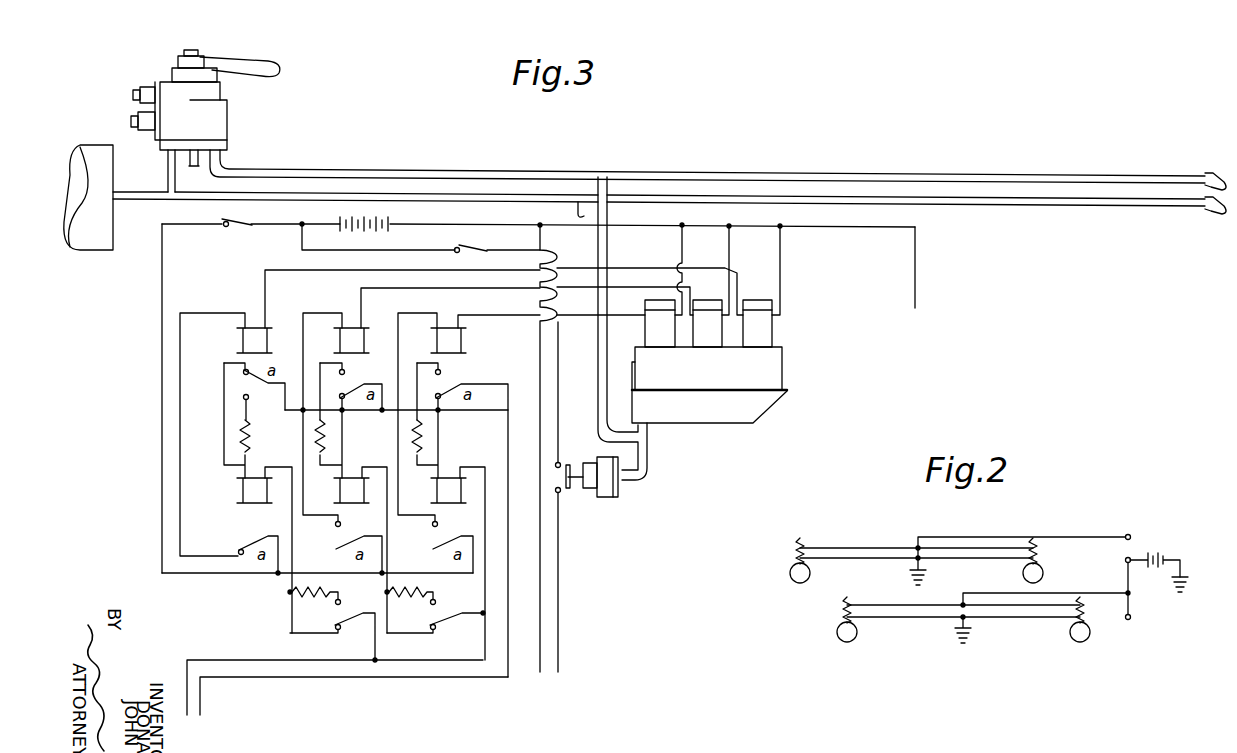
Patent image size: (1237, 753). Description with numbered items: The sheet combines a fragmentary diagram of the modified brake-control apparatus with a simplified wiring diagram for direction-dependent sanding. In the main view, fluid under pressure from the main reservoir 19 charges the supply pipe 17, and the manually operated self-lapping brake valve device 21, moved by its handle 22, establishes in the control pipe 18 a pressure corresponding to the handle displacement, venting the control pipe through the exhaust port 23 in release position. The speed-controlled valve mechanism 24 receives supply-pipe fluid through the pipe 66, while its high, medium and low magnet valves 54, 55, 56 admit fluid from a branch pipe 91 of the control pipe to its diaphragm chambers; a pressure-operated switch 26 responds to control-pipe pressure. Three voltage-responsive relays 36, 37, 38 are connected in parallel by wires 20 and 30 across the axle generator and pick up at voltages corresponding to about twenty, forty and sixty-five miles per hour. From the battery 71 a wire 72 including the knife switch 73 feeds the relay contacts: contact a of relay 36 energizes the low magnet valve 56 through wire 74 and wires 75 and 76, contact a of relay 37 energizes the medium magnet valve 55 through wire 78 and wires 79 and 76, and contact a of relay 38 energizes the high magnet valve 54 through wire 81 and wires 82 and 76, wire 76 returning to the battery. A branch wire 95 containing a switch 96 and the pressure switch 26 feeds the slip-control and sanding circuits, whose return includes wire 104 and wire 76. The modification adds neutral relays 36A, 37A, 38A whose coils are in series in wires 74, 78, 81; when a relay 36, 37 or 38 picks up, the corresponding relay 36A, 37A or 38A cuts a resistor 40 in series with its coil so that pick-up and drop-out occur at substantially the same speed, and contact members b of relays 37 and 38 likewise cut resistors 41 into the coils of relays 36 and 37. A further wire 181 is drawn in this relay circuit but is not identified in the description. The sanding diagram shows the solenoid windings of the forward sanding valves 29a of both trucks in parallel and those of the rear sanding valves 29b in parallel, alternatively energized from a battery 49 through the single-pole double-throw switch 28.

In FIG. 3, the main reservoir 19 is at (96, 145).
In FIG. 3, the brake valve device 21 is at (230, 131).
In FIG. 3, the brake valve handle 22 is at (260, 76).
In FIG. 3, the exhaust port 23 is at (189, 168).
In FIG. 3, the supply pipe 17 is at (471, 202).
In FIG. 3, the control pipe 18 is at (506, 176).
In FIG. 3, the pipe 66 is at (573, 211).
In FIG. 3, the battery 71 is at (397, 220).
In FIG. 3, the knife switch 73 is at (229, 228).
In FIG. 3, the branch wire 95 is at (301, 245).
In FIG. 3, the switch 96 is at (471, 249).
In FIG. 3, the wire 72 is at (163, 281).
In FIG. 3, the wire 74 is at (303, 279).
In FIG. 3, the wire 78 is at (413, 298).
In FIG. 3, the conductor 181 is at (481, 318).
In FIG. 3, the wire 81 is at (397, 446).
In FIG. 3, the wire 104 is at (540, 242).
In FIG. 3, the wire 82 is at (680, 249).
In FIG. 3, the wire 79 is at (727, 249).
In FIG. 3, the wire 75 is at (778, 249).
In FIG. 3, the wire 76 is at (848, 234).
In FIG. 3, the high magnet valve 54 is at (645, 308).
In FIG. 3, the medium magnet valve 55 is at (717, 288).
In FIG. 3, the low magnet valve 56 is at (767, 288).
In FIG. 3, the speed-controlled valve mechanism 24 is at (788, 375).
In FIG. 3, the branch pipe 91 is at (597, 373).
In FIG. 3, the pressure-operated switch 26 is at (602, 500).
In FIG. 3, the relay 36A is at (241, 340).
In FIG. 3, the relay 37A is at (339, 340).
In FIG. 3, the relay 38A is at (436, 348).
In FIG. 3, the voltage-responsive relay 36 is at (240, 492).
In FIG. 3, the voltage-responsive relay 37 is at (336, 492).
In FIG. 3, the voltage-responsive relay 38 is at (434, 492).
In FIG. 3, the resistor 40 is at (250, 434).
In FIG. 3, the resistor 41 is at (318, 600).
In FIG. 3, the wire 20 is at (228, 660).
In FIG. 3, the wire 30 is at (255, 680).
In FIG. 2, the solenoid-operated valve 29a is at (790, 571).
In FIG. 2, the solenoid-operated valve 29b is at (837, 636).
In FIG. 2, the switch 28 is at (1127, 583).
In FIG. 2, the battery 49 is at (1159, 558).